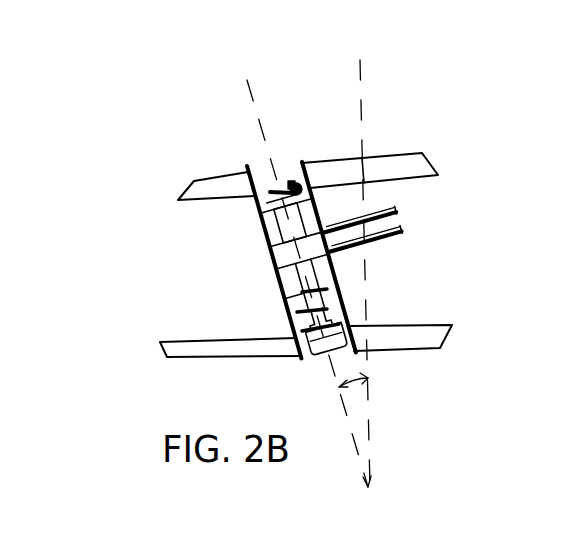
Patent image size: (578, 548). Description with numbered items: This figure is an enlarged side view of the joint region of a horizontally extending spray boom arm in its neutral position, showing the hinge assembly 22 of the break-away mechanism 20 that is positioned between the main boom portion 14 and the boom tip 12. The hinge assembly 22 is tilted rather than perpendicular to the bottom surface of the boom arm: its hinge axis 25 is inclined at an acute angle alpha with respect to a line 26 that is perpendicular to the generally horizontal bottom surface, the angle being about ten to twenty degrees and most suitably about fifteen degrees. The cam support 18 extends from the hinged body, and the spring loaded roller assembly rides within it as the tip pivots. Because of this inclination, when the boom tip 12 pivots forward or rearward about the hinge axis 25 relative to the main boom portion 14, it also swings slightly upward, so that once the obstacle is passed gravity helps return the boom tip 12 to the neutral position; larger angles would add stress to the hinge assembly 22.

The boom tip 12 is at (208, 186).
The main boom portion 14 is at (411, 169).
The cam support 18 is at (388, 222).
The break-away mechanism 20 is at (429, 99).
The hinge assembly 22 is at (296, 274).
The hinge axis 25 is at (252, 83).
The line perpendicular to bottom surface 26 is at (363, 64).